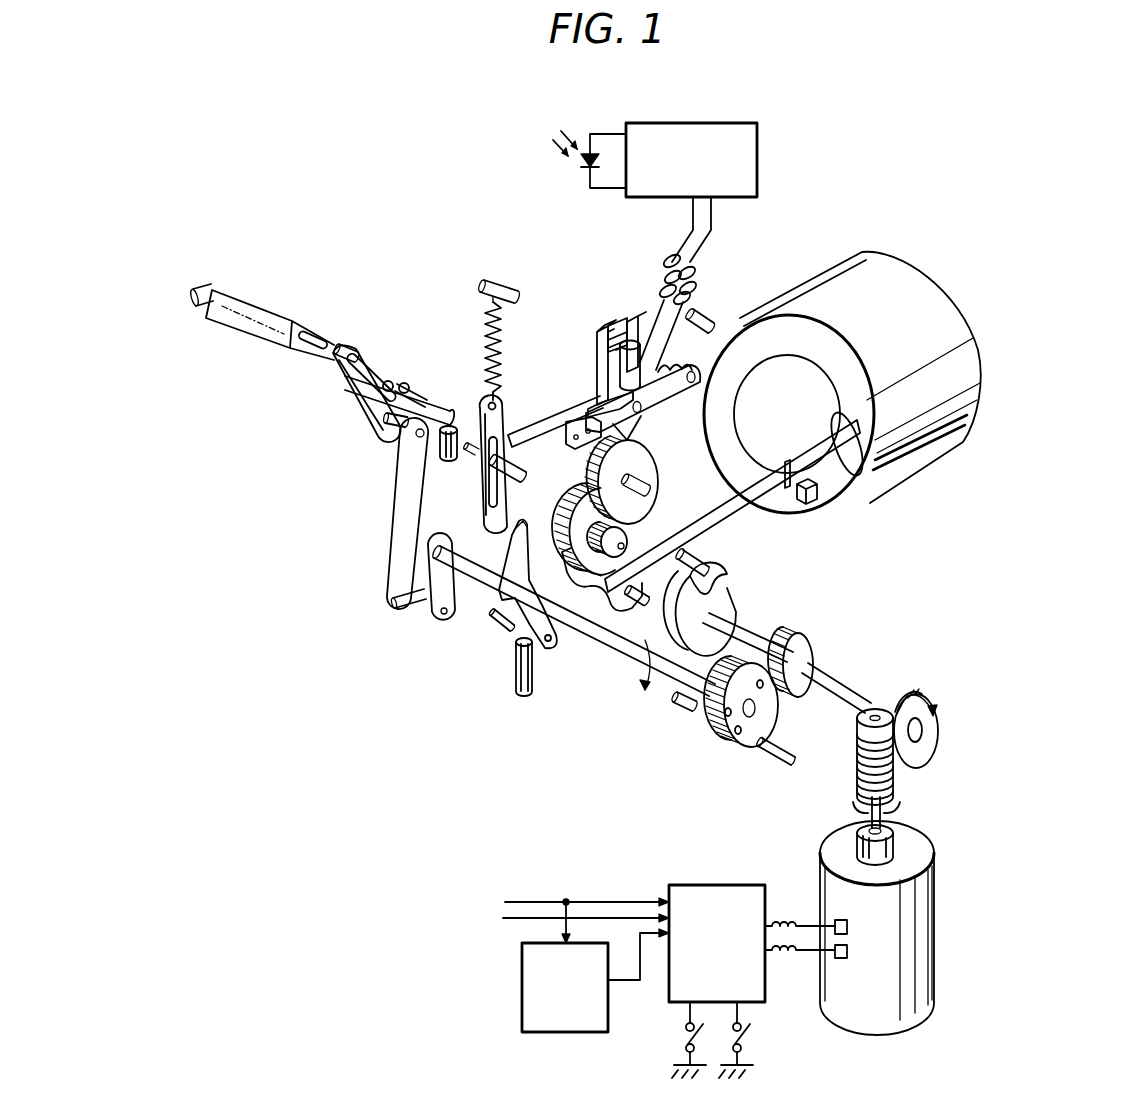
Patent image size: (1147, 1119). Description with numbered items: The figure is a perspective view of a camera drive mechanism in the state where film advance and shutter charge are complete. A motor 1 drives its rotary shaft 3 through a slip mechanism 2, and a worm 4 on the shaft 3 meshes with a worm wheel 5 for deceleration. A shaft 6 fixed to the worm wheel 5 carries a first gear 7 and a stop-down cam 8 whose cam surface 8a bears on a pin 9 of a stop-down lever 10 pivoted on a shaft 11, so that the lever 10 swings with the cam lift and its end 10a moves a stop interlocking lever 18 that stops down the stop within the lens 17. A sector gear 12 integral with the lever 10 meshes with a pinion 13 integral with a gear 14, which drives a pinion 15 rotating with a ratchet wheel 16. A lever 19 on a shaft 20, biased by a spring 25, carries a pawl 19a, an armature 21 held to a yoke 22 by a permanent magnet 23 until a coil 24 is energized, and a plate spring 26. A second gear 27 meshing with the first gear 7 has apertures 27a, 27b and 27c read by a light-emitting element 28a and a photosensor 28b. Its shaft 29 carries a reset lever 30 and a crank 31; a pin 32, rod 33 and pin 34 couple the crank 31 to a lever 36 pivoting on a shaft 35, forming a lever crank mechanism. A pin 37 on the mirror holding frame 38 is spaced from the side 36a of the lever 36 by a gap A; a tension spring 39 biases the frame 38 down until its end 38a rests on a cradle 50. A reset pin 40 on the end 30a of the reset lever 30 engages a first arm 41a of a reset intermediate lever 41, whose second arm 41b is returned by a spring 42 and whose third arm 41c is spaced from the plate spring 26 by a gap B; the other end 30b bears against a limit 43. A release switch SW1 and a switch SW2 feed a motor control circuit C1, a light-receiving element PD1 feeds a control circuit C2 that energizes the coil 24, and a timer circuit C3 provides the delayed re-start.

The motor 1 is at (920, 922).
The slip mechanism 2 is at (893, 836).
The rotary shaft 3 is at (891, 822).
The worm 4 is at (857, 771).
The worm wheel 5 is at (929, 742).
The shaft 6 is at (846, 688).
The first gear 7 is at (806, 650).
The stop-down cam 8 is at (728, 612).
The cam surface 8a is at (723, 575).
The pin 9 is at (712, 557).
The stop-down lever 10 is at (762, 503).
The end of stop-down lever 10a is at (817, 498).
The shaft 11 is at (641, 602).
The sector gear 12 is at (589, 586).
The pinion 13 is at (628, 534).
The gear 14 is at (570, 543).
The pinion 15 is at (592, 473).
The ratchet wheel 16 is at (652, 471).
The lens 17 is at (930, 441).
The stop interlocking lever 18 is at (868, 458).
The lever 19 is at (681, 390).
The pawl 19a is at (646, 427).
The shaft 20 is at (686, 372).
The armature 21 is at (597, 404).
The yoke 22 is at (598, 330).
The permanent magnet 23 is at (612, 322).
The coil 24 is at (624, 360).
The spring 25 is at (706, 312).
The plate spring 26 is at (546, 425).
The second gear 27 is at (766, 719).
The light-transmitting aperture 27a is at (735, 735).
The light-transmitting aperture 27b is at (722, 720).
The light-transmitting aperture 27c is at (764, 688).
The light-emitting element 28a is at (778, 755).
The photosensor 28b is at (673, 702).
The shaft 29 is at (611, 648).
The reset lever 30 is at (500, 591).
The end of reset lever 30a is at (549, 646).
The other end of reset lever 30b is at (528, 528).
The crank 31 is at (436, 606).
The pin 32 is at (397, 608).
The rod 33 is at (392, 543).
The pin 34 is at (392, 432).
The shaft 35 is at (306, 352).
The lever 36 is at (362, 393).
The side of lever 36a is at (364, 370).
The pin 37 is at (420, 397).
The mirror holding frame 38 is at (262, 315).
The end of mirror holding frame 38a is at (436, 412).
The tension spring 39 is at (407, 383).
The reset pin 40 is at (497, 620).
The reset intermediate lever 41 is at (496, 485).
The first arm 41a is at (486, 506).
The second arm 41b is at (500, 398).
The third arm 41c is at (529, 465).
The spring 42 is at (507, 340).
The limit 43 is at (515, 681).
The cradle 50 is at (448, 461).
The gap A is at (389, 380).
The gap B is at (537, 427).
The motor control circuit C1 is at (736, 885).
The control circuit C2 is at (682, 123).
The timer circuit C3 is at (522, 997).
The light-receiving element PD1 is at (583, 168).
The release switch SW1 is at (750, 1032).
The switch SW2 is at (688, 1042).